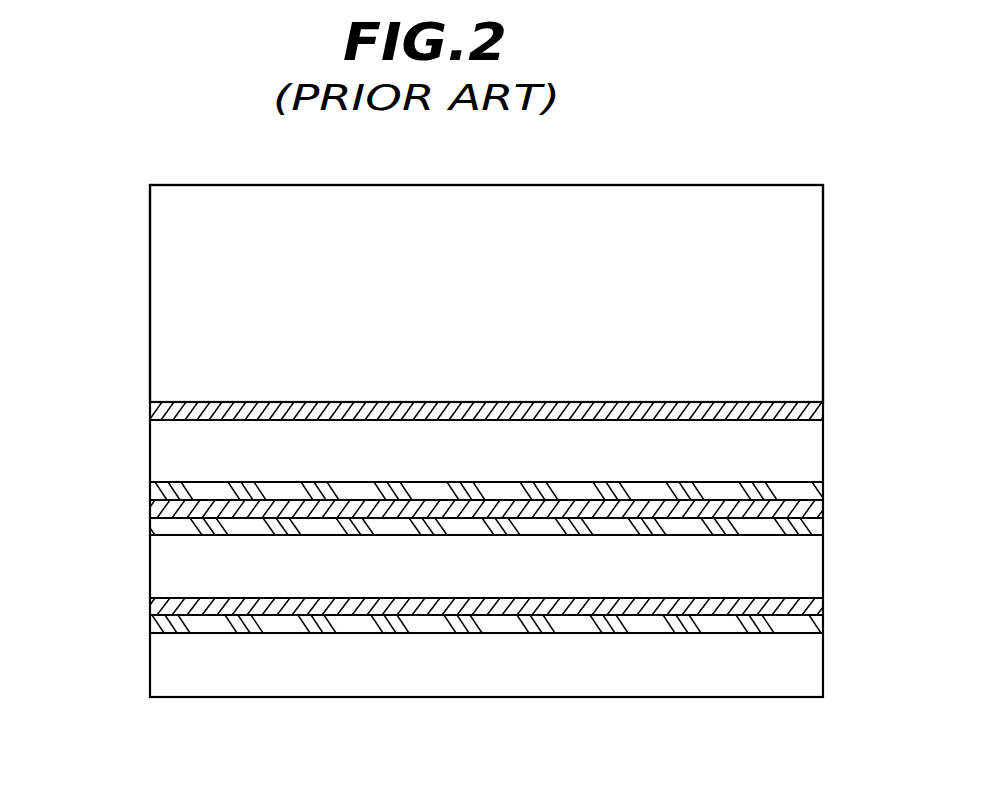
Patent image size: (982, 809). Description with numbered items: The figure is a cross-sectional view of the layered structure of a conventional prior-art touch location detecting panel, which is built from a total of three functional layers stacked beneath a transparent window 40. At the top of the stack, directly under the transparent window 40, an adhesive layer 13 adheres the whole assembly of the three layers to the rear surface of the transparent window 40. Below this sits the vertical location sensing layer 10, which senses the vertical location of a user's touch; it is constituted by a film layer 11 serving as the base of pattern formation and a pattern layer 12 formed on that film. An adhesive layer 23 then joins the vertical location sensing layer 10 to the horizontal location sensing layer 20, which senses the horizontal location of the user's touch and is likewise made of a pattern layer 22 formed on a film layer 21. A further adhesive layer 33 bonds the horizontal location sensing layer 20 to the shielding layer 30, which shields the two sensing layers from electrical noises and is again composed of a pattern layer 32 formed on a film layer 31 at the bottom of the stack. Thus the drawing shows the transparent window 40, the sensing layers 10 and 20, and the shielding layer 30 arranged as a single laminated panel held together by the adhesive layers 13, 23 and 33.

The transparent window 40 is at (150, 284).
The adhesive layer 13 is at (150, 411).
The film layer 11 is at (150, 456).
The pattern layer 12 is at (150, 489).
The adhesive layer 23 is at (150, 508).
The pattern layer 22 is at (150, 528).
The film layer 21 is at (150, 568).
The adhesive layer 33 is at (150, 606).
The pattern layer 32 is at (150, 626).
The film layer 31 is at (150, 666).
The vertical location sensing layer 10 is at (832, 418).
The horizontal location sensing layer 20 is at (832, 518).
The shielding layer 30 is at (832, 615).